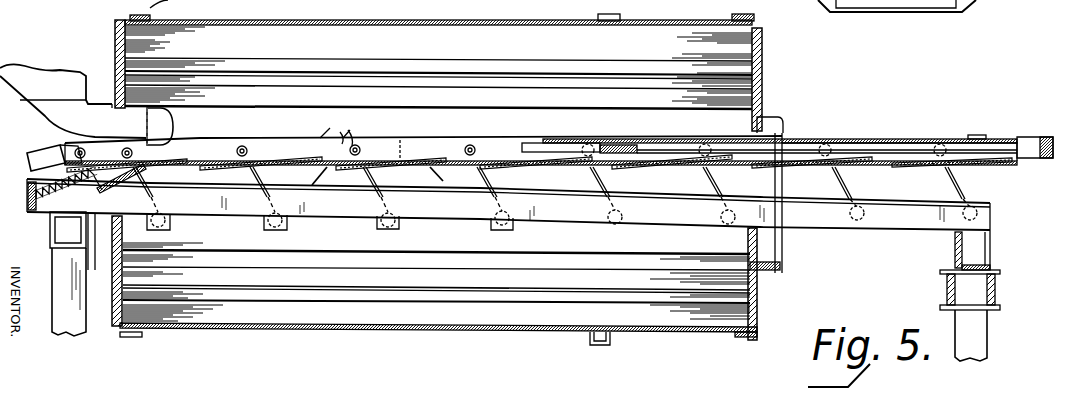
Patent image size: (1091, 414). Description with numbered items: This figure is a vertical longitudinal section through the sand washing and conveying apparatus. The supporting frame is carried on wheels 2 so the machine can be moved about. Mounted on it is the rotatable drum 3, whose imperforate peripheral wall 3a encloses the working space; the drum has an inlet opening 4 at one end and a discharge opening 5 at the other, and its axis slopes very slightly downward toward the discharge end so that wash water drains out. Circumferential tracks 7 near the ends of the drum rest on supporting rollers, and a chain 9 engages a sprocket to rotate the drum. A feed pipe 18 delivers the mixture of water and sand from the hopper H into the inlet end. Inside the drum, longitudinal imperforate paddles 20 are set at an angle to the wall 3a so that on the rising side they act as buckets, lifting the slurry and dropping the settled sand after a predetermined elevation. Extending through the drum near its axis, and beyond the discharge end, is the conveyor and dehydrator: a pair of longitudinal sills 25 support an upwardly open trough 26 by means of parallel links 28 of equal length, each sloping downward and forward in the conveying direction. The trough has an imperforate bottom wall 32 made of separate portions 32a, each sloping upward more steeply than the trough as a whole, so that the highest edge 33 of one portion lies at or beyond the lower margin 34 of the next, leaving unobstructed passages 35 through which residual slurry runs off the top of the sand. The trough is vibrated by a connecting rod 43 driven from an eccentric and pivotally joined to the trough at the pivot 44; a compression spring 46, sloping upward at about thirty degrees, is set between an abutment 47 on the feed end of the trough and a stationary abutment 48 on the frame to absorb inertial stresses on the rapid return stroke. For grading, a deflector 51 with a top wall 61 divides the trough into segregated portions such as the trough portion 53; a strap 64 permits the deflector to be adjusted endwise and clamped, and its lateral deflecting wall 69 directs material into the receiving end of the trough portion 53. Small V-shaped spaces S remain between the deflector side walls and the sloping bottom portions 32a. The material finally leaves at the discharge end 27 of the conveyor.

The wheels 2 is at (866, 12).
The rotatable drum 3 is at (502, 25).
The imperforate peripheral wall 3a is at (655, 38).
The inlet opening 4 is at (116, 228).
The discharge opening 5 is at (792, 134).
The circumferential tracks 7 is at (746, 26).
The chain 9 is at (600, 345).
The feed pipe 18 is at (96, 102).
The imperforate paddles 20 is at (404, 68).
The longitudinal sills 25 is at (892, 234).
The trough 26 is at (400, 140).
The discharge end 27 is at (1028, 130).
The links 28 is at (150, 176).
The imperforate bottom wall 32 is at (222, 144).
The bottom wall portions 32a is at (280, 142).
The highest edge 33 is at (440, 136).
The lower margin 34 is at (312, 185).
The passages 35 is at (340, 114).
The connecting rod 43 is at (38, 152).
The pivot 44 is at (82, 150).
The compression spring 46 is at (56, 204).
The abutment 47 is at (96, 216).
The stationary abutment 48 is at (34, 192).
The deflector 51 is at (858, 138).
The trough portion 53 is at (886, 138).
The top wall 61 is at (926, 138).
The strap 64 is at (972, 134).
The lateral deflecting wall 69 is at (542, 140).
The hopper H is at (46, 70).
The V-shaped open spaces S is at (542, 194).